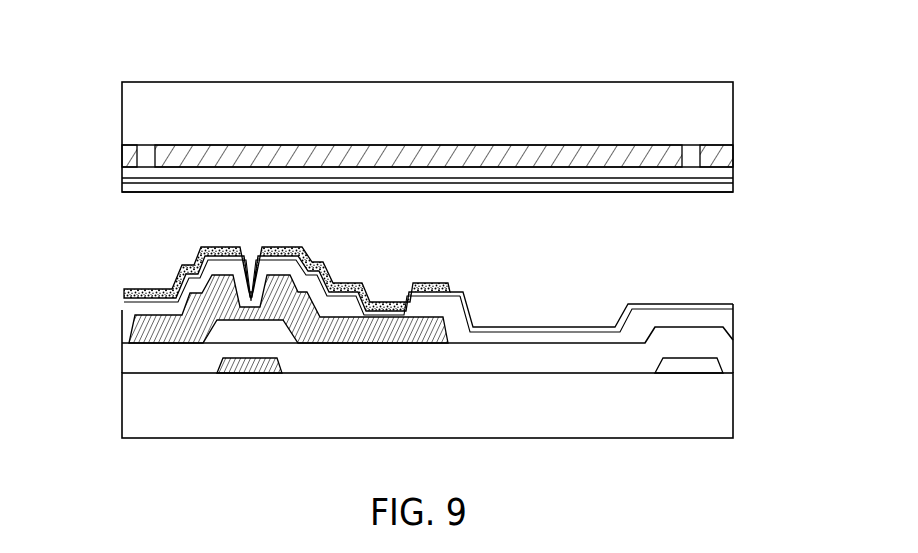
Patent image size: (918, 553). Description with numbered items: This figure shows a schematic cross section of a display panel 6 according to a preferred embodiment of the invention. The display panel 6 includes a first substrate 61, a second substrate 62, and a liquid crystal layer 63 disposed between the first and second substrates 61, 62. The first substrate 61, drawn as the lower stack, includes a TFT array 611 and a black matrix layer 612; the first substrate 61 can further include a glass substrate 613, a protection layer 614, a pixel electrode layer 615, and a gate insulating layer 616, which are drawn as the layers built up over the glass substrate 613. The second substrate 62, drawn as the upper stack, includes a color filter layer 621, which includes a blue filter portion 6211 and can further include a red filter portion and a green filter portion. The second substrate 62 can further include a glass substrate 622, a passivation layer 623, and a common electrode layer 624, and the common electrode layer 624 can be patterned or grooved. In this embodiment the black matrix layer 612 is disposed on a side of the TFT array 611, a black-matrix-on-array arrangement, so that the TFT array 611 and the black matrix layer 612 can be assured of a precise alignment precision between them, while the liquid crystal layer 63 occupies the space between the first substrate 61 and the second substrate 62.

The display panel 6 is at (139, 58).
The first substrate 61 is at (750, 310).
The second substrate 62 is at (750, 73).
The liquid crystal layer 63 is at (700, 250).
The TFT array 611 is at (131, 325).
The black matrix layer 612 is at (147, 290).
The glass substrate 613 is at (128, 410).
The protection layer 614 is at (133, 303).
The pixel electrode layer 615 is at (518, 330).
The gate insulating layer 616 is at (128, 360).
The color filter layer 621 is at (124, 152).
The blue filter portion 6211 is at (393, 147).
The glass substrate 622 is at (122, 104).
The passivation layer 623 is at (124, 180).
The common electrode layer 624 is at (124, 187).